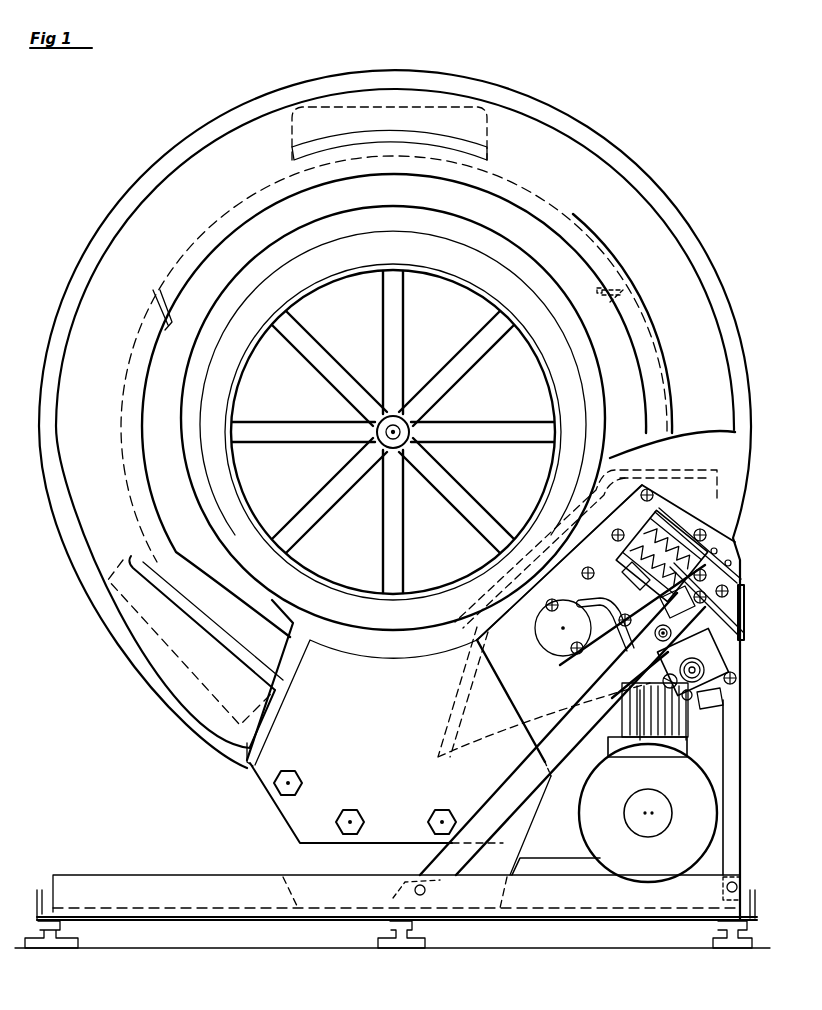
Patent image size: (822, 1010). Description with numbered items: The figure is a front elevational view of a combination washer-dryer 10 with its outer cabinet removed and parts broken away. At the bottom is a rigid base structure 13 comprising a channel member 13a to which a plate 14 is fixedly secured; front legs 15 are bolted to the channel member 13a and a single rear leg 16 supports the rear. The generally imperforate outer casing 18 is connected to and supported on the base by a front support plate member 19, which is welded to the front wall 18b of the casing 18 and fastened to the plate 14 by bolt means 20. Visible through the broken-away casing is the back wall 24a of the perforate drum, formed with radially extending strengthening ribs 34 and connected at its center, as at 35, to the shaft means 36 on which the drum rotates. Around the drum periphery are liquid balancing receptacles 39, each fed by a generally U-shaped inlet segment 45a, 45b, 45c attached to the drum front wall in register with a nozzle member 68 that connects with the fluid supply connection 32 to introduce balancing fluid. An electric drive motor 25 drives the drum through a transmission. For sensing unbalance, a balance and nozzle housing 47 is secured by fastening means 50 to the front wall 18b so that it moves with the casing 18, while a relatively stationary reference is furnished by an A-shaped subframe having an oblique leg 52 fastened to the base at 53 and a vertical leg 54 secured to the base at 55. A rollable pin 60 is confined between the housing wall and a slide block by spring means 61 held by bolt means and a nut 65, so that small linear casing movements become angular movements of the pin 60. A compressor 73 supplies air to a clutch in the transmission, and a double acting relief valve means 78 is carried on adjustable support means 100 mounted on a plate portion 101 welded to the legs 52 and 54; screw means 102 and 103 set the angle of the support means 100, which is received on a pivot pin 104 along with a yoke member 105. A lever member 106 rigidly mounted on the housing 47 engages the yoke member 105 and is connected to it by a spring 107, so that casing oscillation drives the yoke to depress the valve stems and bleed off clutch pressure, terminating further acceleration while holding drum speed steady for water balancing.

The combination washer-dryer 10 is at (563, 95).
The base structure 13 is at (150, 924).
The channel member 13a is at (114, 886).
The plate 14 is at (512, 845).
The front legs 15 is at (50, 932).
The rear leg 16 is at (400, 935).
The outer casing 18 is at (684, 214).
The front wall of casing 18b is at (250, 758).
The front support plate member 19 is at (262, 772).
The bolt means 20 is at (293, 776).
The back wall of drum 24a is at (393, 432).
The electric drive motor 25 is at (648, 813).
The connection 32 is at (632, 744).
The strengthening ribs 34 is at (306, 350).
The drum-to-shaft connection 35 is at (424, 422).
The shaft means 36 is at (409, 410).
The liquid balancing receptacle 39 is at (356, 100).
The inlet segment 45a is at (132, 492).
The inlet segment 45b is at (512, 188).
The inlet segment 45c is at (660, 410).
The balance and nozzle housing 47 is at (741, 543).
The fastening means 50 is at (622, 540).
The oblique leg 52 is at (562, 770).
The fastening point of oblique leg 53 is at (427, 890).
The vertical leg 54 is at (726, 836).
The fastening point of vertical leg 55 is at (738, 886).
The rollable pin 60 is at (666, 530).
The spring means 61 is at (706, 600).
The nut 65 is at (634, 580).
The nozzle member 68 is at (622, 644).
The compressor 73 is at (690, 750).
The double acting relief valve means 78 is at (700, 678).
The support means 100 is at (720, 703).
The plate portion 101 is at (626, 688).
The screw means 102 is at (690, 700).
The screw means 103 is at (650, 758).
The pivot pin 104 is at (653, 645).
The yoke member 105 is at (659, 683).
The lever member 106 is at (672, 602).
The spring 107 is at (744, 606).